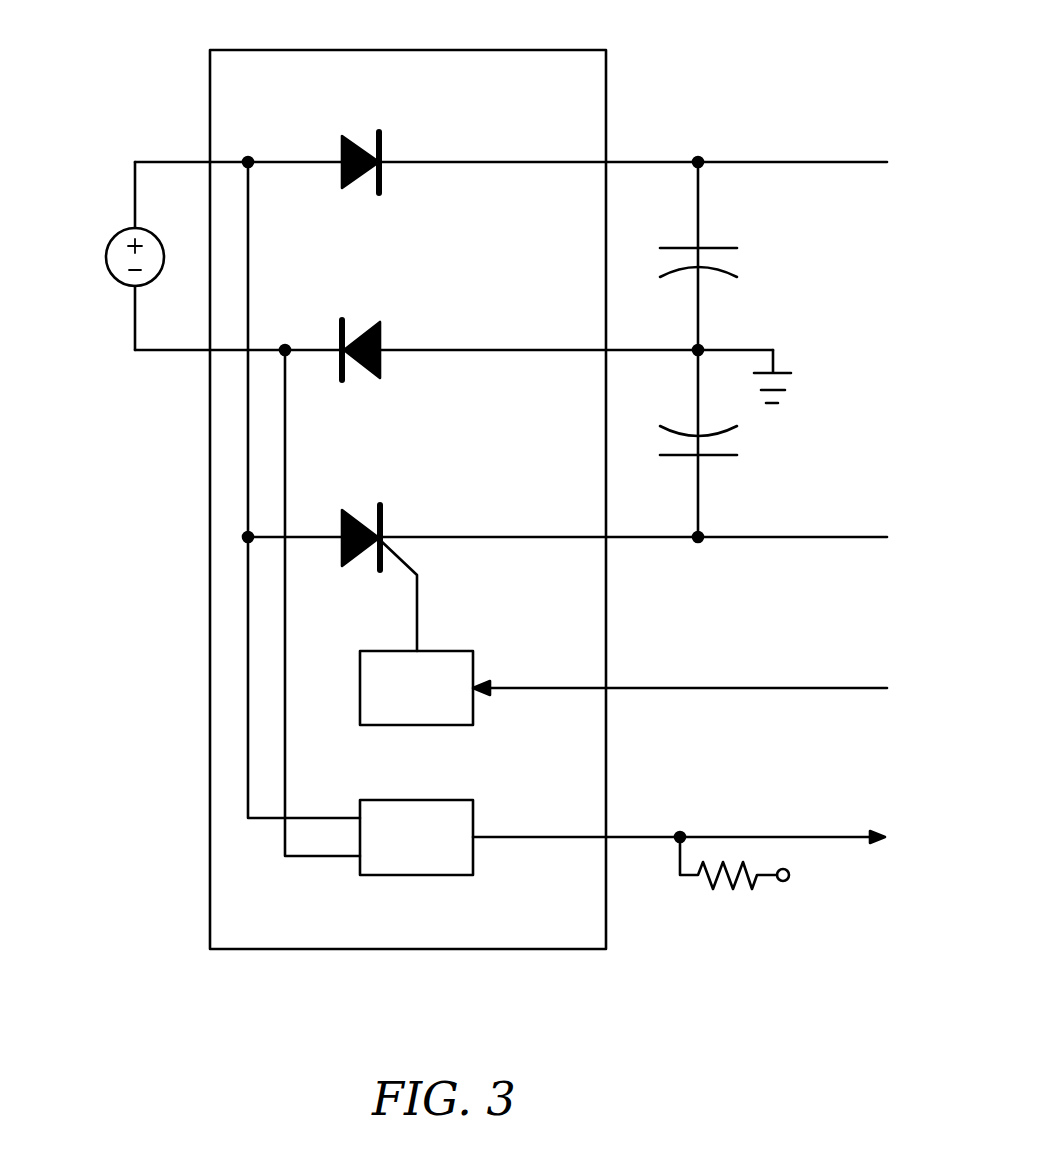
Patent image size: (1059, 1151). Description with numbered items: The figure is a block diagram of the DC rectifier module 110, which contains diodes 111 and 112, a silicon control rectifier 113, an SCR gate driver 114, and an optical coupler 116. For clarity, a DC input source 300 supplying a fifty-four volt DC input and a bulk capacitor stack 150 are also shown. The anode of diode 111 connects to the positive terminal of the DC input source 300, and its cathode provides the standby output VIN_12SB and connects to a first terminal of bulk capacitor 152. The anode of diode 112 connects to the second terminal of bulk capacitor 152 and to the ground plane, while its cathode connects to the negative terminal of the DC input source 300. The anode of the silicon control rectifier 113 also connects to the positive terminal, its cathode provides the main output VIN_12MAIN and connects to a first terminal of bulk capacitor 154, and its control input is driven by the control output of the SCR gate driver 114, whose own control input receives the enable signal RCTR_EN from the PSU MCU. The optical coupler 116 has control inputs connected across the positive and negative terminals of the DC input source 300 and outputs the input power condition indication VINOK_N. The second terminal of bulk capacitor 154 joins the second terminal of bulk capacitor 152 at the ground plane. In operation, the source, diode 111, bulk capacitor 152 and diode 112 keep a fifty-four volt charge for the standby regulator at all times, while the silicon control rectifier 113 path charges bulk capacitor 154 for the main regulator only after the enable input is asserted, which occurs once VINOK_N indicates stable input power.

The DC rectifier module 110 is at (224, 50).
The diode 111 is at (342, 138).
The diode 112 is at (378, 322).
The silicon control rectifier 113 is at (342, 513).
The SCR gate driver 114 is at (377, 651).
The optical coupler 116 is at (377, 800).
The bulk capacitor stack 150 is at (733, 123).
The bulk capacitor 152 is at (727, 248).
The bulk capacitor 154 is at (732, 457).
The DC input source 300 is at (116, 236).